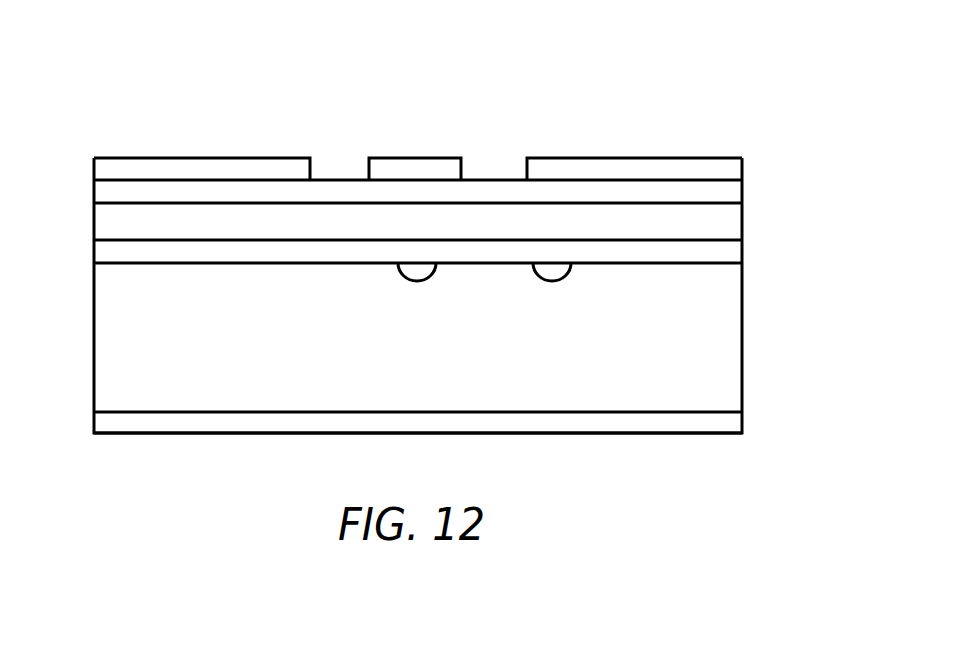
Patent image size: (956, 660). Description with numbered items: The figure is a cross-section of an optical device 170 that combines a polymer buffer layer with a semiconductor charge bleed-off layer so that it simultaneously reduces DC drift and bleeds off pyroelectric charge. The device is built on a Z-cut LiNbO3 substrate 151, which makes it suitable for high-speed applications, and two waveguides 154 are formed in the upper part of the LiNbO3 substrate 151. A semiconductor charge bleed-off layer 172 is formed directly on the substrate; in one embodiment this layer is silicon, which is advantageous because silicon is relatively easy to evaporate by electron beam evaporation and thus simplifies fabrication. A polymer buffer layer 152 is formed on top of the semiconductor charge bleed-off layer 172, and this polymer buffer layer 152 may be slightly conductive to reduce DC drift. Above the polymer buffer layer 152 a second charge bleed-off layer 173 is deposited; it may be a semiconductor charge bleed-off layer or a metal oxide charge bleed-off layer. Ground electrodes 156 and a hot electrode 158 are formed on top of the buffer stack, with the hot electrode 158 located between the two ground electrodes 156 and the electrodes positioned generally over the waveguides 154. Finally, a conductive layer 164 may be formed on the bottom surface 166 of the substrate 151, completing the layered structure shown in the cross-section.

The LiNbO3 substrate 151 is at (115, 314).
The polymer buffer layer 152 is at (745, 212).
The waveguides 154 is at (415, 284).
The ground electrodes 156 is at (205, 158).
The hot electrode 158 is at (415, 158).
The conductive layer 164 is at (655, 433).
The bottom surface 166 is at (543, 412).
The optical device 170 is at (458, 52).
The semiconductor charge bleed-off layer 172 is at (745, 253).
The second charge bleed-off layer 173 is at (745, 191).